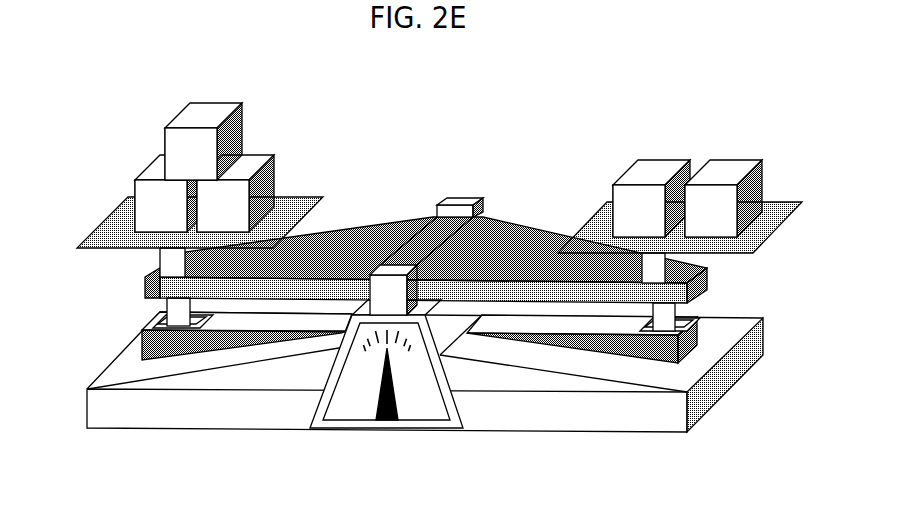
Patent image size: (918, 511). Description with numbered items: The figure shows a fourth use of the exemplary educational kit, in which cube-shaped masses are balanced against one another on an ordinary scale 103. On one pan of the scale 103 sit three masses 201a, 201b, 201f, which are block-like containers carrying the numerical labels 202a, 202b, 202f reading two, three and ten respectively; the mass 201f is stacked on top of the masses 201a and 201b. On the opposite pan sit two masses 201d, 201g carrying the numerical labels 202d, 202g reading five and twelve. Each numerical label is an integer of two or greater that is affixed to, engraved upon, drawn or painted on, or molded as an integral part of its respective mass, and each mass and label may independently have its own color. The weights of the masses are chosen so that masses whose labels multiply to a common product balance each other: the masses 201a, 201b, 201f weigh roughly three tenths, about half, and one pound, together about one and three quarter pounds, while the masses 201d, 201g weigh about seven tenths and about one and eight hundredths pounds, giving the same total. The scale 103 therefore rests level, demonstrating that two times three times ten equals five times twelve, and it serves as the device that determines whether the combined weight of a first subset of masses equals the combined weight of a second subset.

The scale 103 is at (153, 428).
The mass 201a is at (155, 167).
The mass 201b is at (260, 155).
The mass 201f is at (215, 107).
The mass 201d is at (653, 165).
The mass 201g is at (727, 167).
The numerical label 202a is at (145, 188).
The numerical label 202b is at (237, 205).
The numerical label 202f is at (173, 130).
The numerical label 202d is at (632, 197).
The numerical label 202g is at (742, 198).